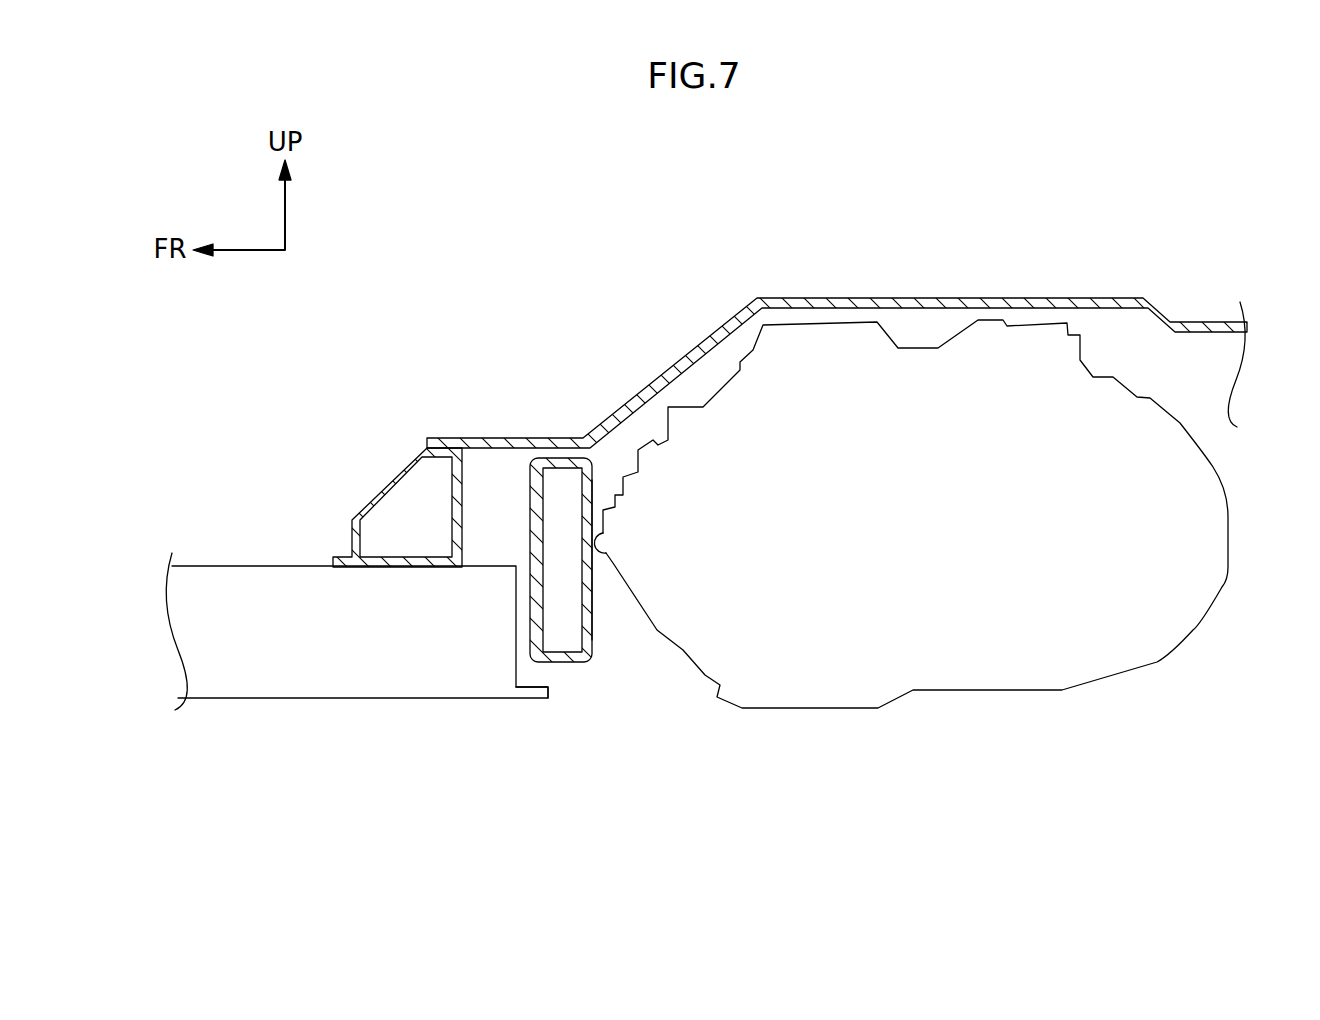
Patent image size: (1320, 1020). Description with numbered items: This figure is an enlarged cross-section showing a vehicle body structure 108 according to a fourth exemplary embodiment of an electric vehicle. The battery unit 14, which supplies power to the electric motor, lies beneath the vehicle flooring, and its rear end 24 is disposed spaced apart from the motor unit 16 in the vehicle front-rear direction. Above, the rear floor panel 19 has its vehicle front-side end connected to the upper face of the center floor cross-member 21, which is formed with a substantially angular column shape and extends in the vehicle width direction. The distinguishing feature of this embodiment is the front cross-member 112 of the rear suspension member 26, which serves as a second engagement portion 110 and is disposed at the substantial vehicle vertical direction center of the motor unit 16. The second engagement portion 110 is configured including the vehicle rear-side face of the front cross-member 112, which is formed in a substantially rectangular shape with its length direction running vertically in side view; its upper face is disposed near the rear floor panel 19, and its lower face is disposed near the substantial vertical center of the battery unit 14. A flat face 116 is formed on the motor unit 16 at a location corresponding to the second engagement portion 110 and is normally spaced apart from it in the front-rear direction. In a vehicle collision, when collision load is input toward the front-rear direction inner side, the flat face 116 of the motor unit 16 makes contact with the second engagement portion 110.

The battery unit 14 is at (307, 687).
The rear end 24 is at (493, 682).
The center floor cross-member 21 is at (388, 477).
The rear floor panel 19 is at (820, 303).
The vehicle body structure 108 is at (837, 468).
The motor unit 16 is at (865, 688).
The flat face 116 is at (612, 562).
The front cross-member 112 is at (591, 634).
The rear suspension member 26 is at (572, 662).
The second engagement portion 110 is at (590, 608).